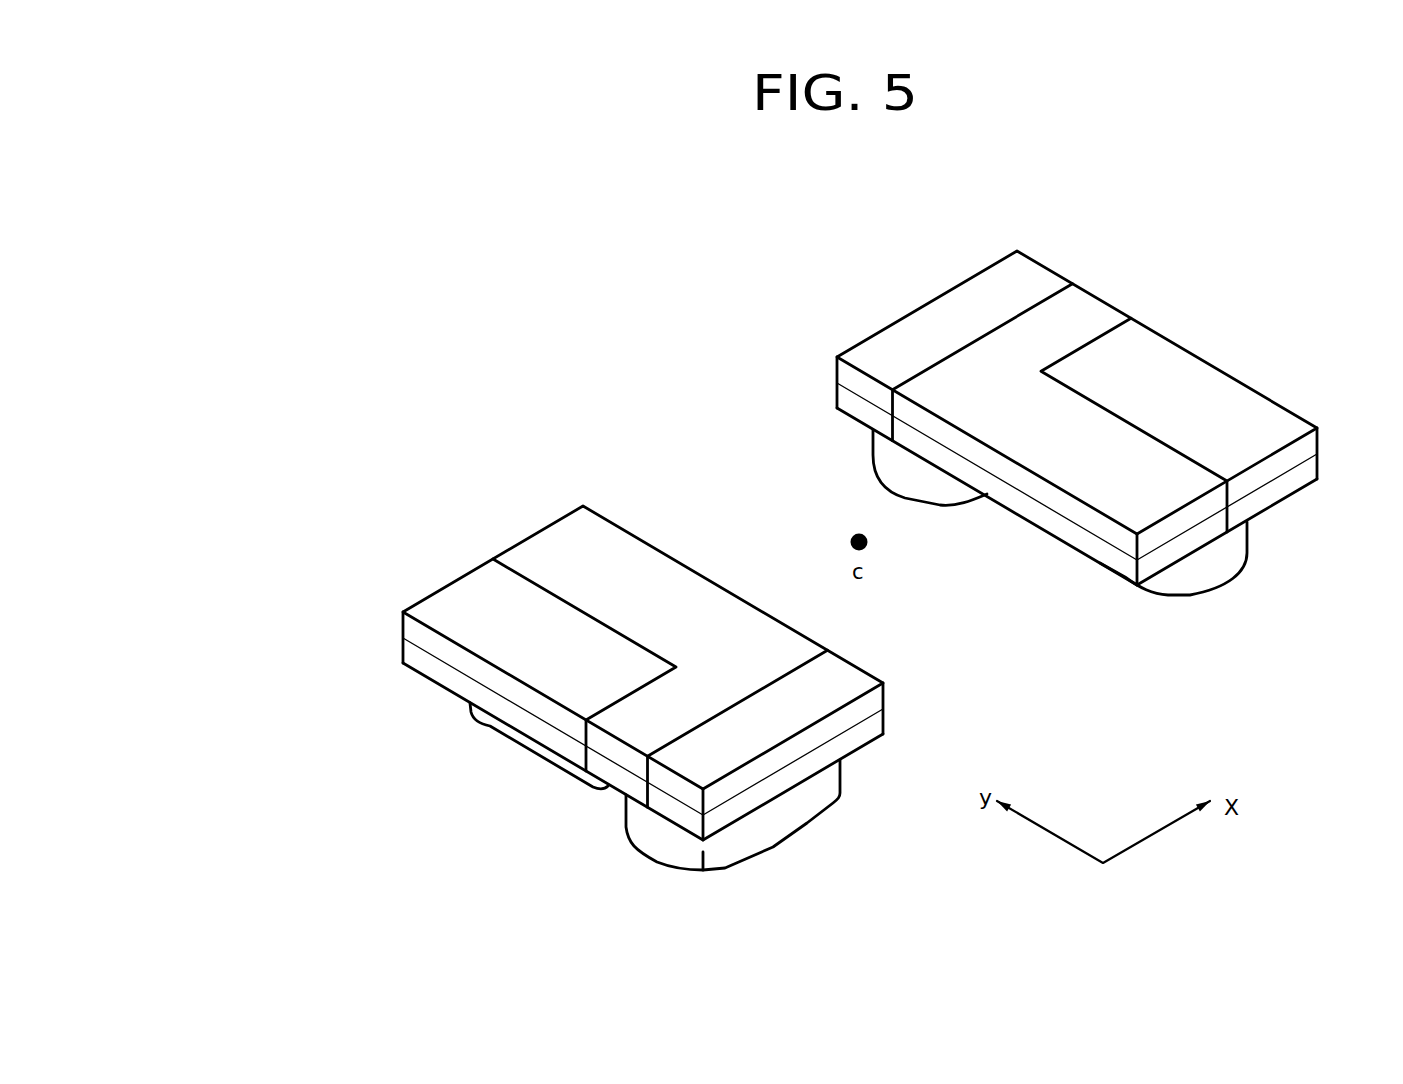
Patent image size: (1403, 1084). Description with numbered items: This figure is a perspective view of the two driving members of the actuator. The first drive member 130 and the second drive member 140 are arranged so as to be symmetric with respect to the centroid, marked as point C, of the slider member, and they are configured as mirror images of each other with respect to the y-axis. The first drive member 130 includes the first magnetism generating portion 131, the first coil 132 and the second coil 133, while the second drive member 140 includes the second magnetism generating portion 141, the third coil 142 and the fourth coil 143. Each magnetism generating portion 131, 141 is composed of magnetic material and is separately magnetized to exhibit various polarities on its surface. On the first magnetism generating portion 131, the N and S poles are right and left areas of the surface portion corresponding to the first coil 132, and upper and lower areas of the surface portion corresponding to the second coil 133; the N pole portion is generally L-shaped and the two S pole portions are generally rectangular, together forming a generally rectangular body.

The first drive member 130 is at (1108, 225).
The first magnetism generating portion 131 is at (882, 350).
The first coil 132 is at (1208, 568).
The second coil 133 is at (883, 450).
The second drive member 140 is at (362, 580).
The second magnetism generating portion 141 is at (457, 602).
The third coil 142 is at (527, 743).
The fourth coil 143 is at (782, 823).